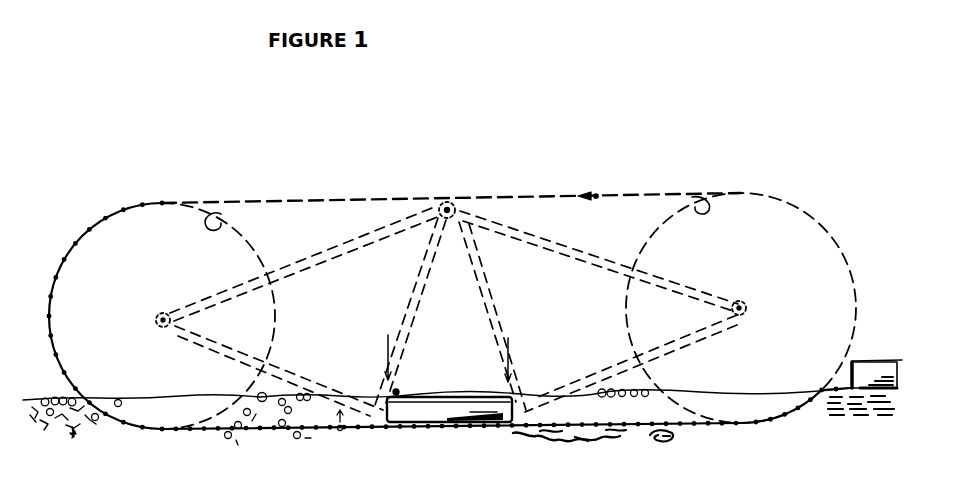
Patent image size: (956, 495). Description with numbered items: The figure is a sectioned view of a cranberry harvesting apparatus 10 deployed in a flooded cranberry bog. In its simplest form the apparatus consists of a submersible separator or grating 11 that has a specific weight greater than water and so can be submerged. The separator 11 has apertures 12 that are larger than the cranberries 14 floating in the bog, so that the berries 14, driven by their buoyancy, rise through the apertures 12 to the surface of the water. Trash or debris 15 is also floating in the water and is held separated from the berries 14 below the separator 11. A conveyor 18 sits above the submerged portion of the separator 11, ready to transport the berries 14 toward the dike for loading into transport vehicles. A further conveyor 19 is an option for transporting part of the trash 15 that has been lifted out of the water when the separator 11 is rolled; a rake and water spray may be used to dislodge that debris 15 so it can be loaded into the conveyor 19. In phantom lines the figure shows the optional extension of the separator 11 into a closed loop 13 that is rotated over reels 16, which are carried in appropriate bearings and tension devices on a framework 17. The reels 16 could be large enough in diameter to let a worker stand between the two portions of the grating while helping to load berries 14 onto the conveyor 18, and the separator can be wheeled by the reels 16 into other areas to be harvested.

The cranberry harvesting apparatus 10 is at (143, 203).
The separator 11 is at (65, 253).
The apertures 12 is at (180, 434).
The closed loop 13 is at (543, 195).
The cranberries 14 is at (298, 437).
The trash 15 is at (48, 430).
The reels 16 is at (221, 224).
The framework 17 is at (463, 243).
The conveyor 18 is at (415, 410).
The further conveyor 19 is at (867, 367).